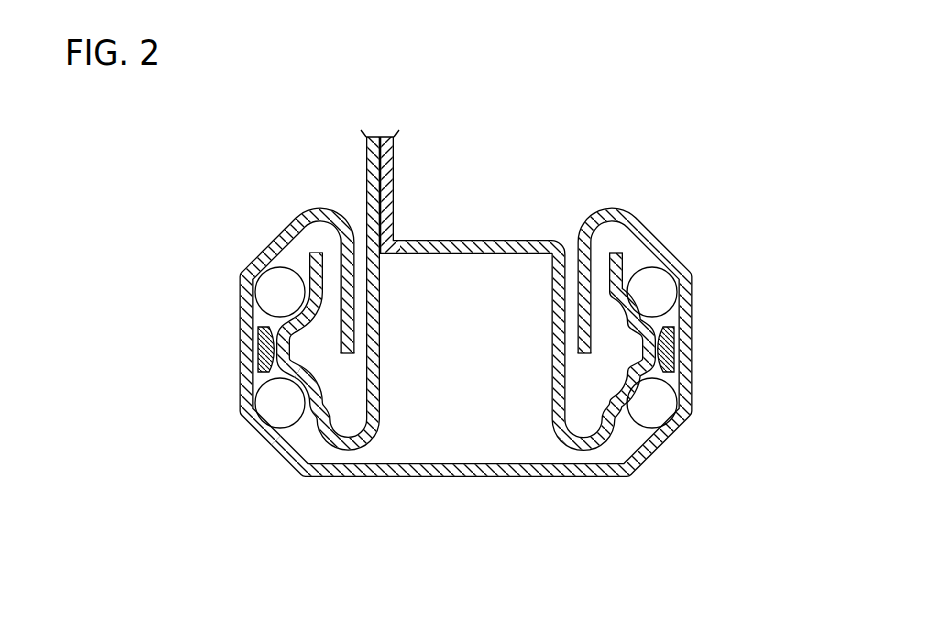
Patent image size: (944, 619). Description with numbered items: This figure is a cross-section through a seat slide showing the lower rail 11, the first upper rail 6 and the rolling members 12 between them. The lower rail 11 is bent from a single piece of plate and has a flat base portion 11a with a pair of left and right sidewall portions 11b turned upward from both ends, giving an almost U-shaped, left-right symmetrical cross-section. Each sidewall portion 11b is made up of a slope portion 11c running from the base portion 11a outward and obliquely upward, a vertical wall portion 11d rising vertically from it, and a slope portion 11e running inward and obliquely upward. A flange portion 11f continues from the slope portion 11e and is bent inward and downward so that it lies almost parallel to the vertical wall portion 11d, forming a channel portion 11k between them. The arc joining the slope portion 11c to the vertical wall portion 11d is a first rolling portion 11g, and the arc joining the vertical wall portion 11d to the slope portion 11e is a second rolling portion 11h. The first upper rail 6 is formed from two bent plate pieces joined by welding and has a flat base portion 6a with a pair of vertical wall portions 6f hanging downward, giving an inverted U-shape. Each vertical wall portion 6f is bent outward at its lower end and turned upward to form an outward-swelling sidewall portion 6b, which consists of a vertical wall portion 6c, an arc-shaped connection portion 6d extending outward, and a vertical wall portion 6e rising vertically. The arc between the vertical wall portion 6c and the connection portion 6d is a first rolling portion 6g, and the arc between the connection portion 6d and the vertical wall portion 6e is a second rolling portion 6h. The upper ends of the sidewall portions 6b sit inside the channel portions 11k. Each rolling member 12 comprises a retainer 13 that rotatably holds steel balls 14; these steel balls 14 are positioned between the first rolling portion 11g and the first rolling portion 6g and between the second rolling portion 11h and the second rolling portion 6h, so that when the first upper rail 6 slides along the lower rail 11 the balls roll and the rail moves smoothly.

The first upper rail 6 is at (514, 228).
The base portion 6a is at (471, 239).
The sidewall portion 6b is at (390, 348).
The vertical wall portion 6c is at (448, 285).
The connection portion 6d is at (284, 355).
The vertical wall portion 6e is at (319, 283).
The vertical wall portion 6f is at (399, 232).
The first rolling portion 6g is at (298, 388).
The second rolling portion 6h is at (307, 252).
The lower rail 11 is at (490, 484).
The base portion 11a is at (422, 480).
The sidewall portion 11b is at (185, 355).
The slope portion 11c is at (227, 413).
The vertical wall portion 11d is at (256, 344).
The slope portion 11e is at (254, 266).
The flange portion 11f is at (338, 206).
The first rolling portion 11g is at (282, 462).
The second rolling portion 11h is at (273, 267).
The channel portion 11k is at (318, 237).
The rolling member 12 is at (728, 393).
The retainer 13 is at (768, 325).
The steel ball 14 is at (654, 300).